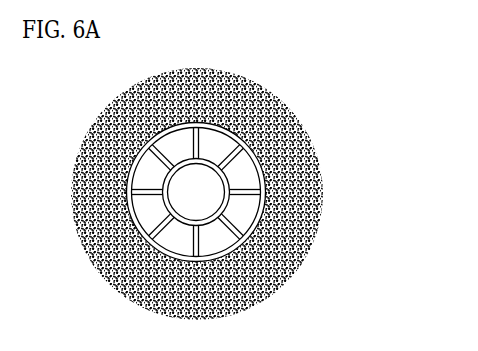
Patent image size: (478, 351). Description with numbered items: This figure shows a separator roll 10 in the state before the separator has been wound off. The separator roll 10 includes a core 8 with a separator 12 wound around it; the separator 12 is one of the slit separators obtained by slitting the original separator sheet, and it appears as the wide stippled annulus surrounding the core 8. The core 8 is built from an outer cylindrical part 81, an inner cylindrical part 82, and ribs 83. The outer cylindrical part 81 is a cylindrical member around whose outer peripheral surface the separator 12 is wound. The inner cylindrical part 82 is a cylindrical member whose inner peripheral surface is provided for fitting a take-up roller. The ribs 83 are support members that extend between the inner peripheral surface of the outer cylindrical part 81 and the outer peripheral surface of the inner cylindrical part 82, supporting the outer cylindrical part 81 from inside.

The separator roll 10 is at (259, 194).
The separator 12 is at (315, 218).
The core 8 is at (261, 192).
The outer cylindrical part 81 is at (232, 133).
The inner cylindrical part 82 is at (230, 182).
The ribs 83 is at (242, 157).